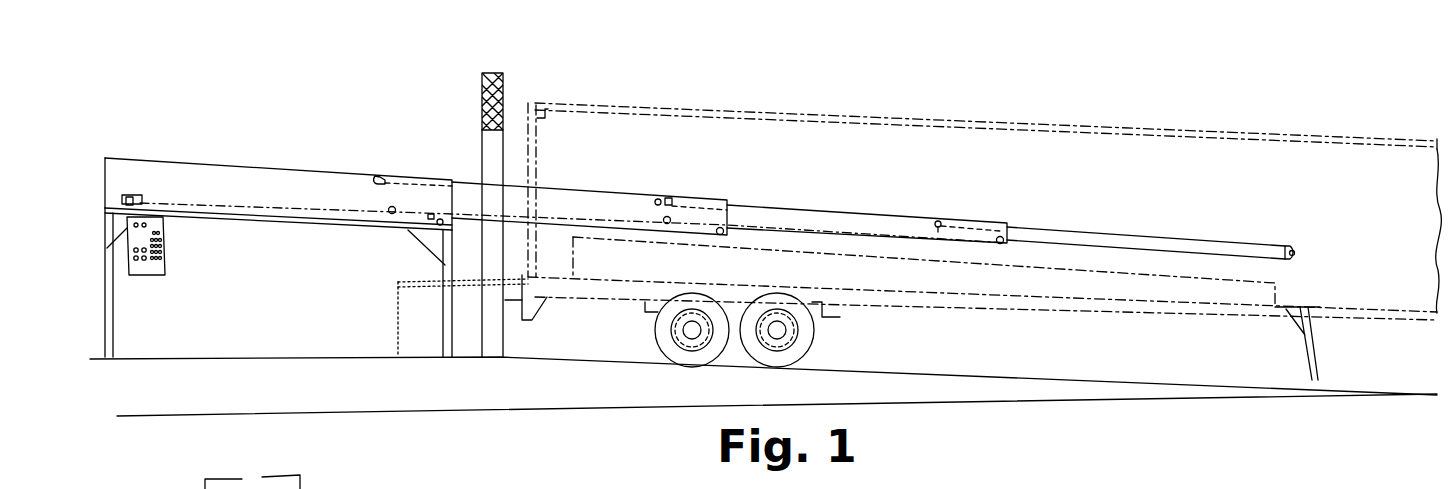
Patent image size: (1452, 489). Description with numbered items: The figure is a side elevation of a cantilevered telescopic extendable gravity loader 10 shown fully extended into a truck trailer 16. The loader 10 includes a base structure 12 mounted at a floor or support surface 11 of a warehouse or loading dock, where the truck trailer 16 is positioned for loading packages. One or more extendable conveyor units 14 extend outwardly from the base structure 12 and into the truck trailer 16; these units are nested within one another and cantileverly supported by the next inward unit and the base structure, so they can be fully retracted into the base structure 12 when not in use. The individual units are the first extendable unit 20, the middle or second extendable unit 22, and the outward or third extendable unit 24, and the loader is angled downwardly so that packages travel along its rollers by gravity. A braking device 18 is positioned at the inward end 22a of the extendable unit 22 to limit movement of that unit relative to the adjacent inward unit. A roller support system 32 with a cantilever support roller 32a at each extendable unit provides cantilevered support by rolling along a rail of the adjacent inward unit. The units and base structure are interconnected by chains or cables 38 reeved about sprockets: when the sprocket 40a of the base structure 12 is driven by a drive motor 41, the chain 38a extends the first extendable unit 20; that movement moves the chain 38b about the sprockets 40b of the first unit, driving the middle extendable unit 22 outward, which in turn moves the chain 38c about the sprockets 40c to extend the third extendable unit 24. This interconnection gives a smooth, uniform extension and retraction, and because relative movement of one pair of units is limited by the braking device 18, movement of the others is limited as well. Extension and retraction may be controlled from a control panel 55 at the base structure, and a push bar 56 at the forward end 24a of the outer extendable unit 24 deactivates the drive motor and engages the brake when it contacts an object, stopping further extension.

The cantilevered telescopic extendable conveyor or loader 10 is at (343, 137).
The floor or support surface 11 is at (194, 357).
The base structure 12 is at (270, 222).
The extendable conveyor units 14 is at (789, 182).
The truck trailer 16 is at (970, 120).
The braking device 18 is at (648, 202).
The first extendable unit 20 is at (516, 193).
The middle or second extendable unit 22 is at (830, 213).
The inward end of extendable unit 22 22a is at (682, 202).
The outward or third extendable unit 24 is at (1070, 233).
The forward end of forward extendable unit 24a is at (1285, 248).
The roller support system 32 is at (380, 174).
The cantilever support roller 32a is at (935, 224).
The chains or cables 38 is at (243, 198).
The chain of base structure 38a is at (290, 207).
The chain of first extendable unit 38b is at (476, 210).
The chain of middle extendable unit 38c is at (789, 212).
The sprocket of base structure 40a is at (137, 195).
The sprockets of first extendable unit 40b is at (390, 208).
The sprockets of middle extendable unit 40c is at (667, 224).
The drive motor 41 is at (128, 196).
The control panel 55 is at (142, 272).
The stop or bumper or push bar 56 is at (1295, 254).